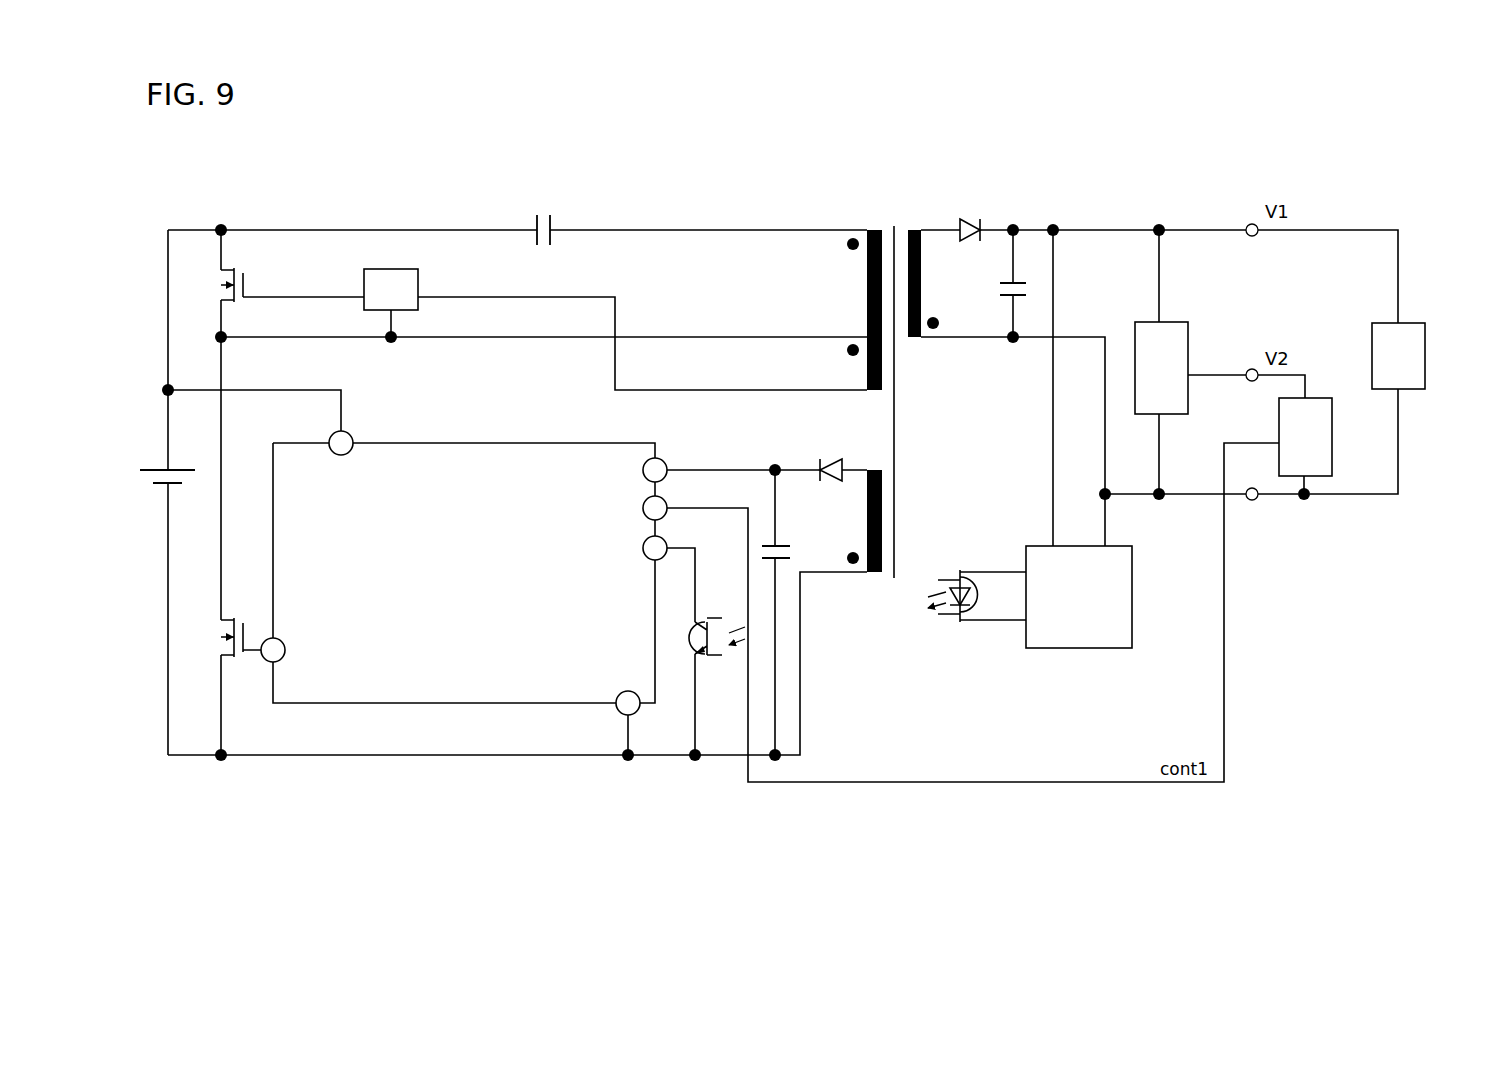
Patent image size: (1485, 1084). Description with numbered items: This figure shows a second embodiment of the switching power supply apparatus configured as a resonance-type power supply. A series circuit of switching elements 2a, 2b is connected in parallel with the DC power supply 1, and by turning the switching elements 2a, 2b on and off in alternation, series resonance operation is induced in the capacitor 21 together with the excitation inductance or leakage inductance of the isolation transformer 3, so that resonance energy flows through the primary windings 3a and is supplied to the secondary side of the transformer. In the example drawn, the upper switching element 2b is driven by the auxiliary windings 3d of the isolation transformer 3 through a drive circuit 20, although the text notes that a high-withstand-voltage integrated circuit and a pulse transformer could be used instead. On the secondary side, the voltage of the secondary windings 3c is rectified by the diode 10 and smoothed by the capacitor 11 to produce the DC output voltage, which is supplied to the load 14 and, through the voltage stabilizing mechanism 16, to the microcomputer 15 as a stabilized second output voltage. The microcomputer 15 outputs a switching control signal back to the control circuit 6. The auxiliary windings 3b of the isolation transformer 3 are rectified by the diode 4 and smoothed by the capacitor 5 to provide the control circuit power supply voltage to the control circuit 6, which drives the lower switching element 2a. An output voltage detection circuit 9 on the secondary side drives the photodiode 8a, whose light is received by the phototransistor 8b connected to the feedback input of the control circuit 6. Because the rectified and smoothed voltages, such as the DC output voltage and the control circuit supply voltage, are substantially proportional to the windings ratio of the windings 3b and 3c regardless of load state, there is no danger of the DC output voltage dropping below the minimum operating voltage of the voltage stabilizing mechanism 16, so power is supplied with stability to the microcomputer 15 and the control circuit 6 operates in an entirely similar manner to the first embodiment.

The DC power supply 1 is at (155, 455).
The switching element 2a is at (206, 612).
The switching element 2b is at (207, 290).
The isolation transformer 3 is at (891, 368).
The primary windings 3a is at (853, 295).
The auxiliary windings 3b is at (857, 537).
The secondary windings 3c is at (935, 285).
The auxiliary windings 3d is at (853, 378).
The diode 4 is at (838, 445).
The capacitor 5 is at (800, 560).
The control circuit 6 is at (482, 470).
The photodiode 8a is at (958, 635).
The phototransistor 8b is at (710, 662).
The output voltage detection circuit 9 is at (1080, 658).
The diode 10 is at (972, 212).
The capacitor 11 is at (1000, 283).
The load 14 is at (1410, 400).
The microcomputer 15 is at (1345, 438).
The voltage stabilizing mechanism 16 is at (1146, 318).
The drive circuit 20 is at (390, 262).
The capacitor 21 is at (537, 208).